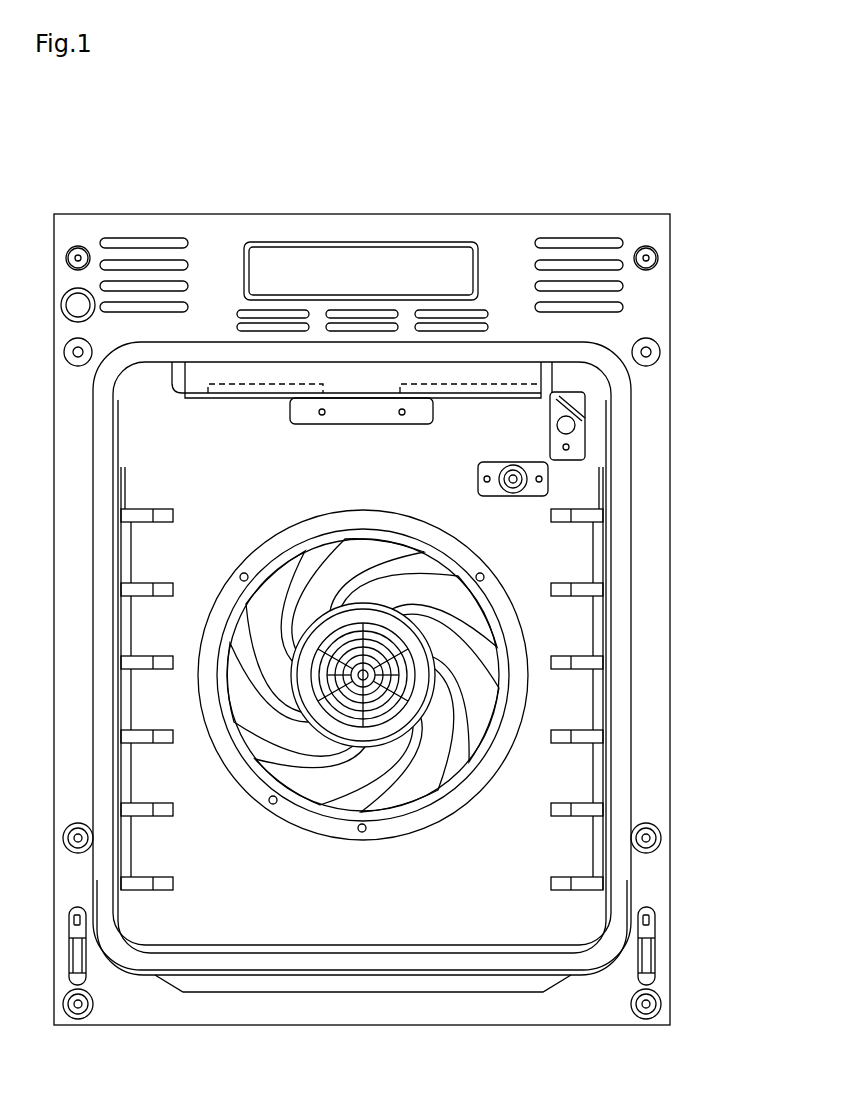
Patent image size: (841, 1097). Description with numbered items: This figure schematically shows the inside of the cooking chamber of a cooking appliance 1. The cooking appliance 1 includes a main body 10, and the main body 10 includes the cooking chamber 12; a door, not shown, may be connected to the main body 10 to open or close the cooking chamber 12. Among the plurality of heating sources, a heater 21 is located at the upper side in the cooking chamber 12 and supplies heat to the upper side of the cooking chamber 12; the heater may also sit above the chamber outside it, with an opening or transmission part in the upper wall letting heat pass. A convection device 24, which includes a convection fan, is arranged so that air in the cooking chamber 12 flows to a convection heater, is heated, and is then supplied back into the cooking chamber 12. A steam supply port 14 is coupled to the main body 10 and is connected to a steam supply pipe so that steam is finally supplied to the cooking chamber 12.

The cooking appliance 1 is at (530, 184).
The main body 10 is at (663, 506).
The cooking chamber 12 is at (567, 762).
The steam supply port 14 is at (517, 462).
The heater 21 is at (540, 384).
The convection device 24 is at (507, 560).